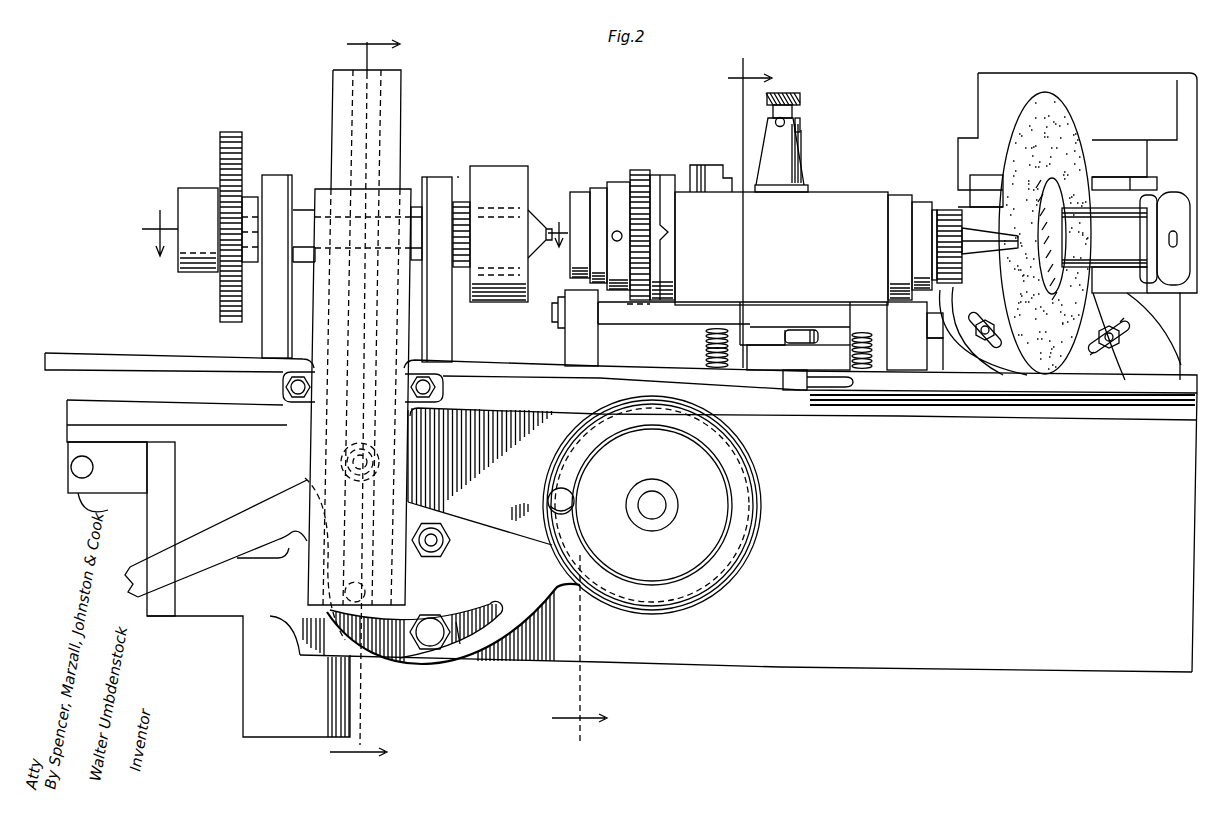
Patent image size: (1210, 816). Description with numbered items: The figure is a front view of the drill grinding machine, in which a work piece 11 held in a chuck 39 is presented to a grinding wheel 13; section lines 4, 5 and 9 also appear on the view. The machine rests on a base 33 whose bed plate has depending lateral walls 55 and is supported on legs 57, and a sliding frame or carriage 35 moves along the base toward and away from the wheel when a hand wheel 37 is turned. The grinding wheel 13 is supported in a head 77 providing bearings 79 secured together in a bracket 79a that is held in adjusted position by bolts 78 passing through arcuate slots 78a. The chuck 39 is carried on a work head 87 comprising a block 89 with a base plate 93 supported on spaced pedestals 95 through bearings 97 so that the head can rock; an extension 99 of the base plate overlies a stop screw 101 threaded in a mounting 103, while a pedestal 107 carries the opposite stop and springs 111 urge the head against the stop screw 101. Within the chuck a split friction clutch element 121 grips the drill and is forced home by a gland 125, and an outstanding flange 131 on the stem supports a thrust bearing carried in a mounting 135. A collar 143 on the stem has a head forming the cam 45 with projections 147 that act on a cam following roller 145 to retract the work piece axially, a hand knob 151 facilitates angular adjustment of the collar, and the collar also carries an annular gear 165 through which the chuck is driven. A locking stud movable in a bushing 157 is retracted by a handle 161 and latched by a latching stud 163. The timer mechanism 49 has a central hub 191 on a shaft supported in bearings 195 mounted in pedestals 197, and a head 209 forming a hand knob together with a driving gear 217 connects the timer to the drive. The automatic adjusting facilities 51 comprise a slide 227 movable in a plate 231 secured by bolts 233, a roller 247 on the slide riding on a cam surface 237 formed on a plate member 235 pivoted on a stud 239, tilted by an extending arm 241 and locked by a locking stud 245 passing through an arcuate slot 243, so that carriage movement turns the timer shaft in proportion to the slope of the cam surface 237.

The section line 4- 4 is at (365, 399).
The section line 5- 5 is at (656, 398).
The section line 9- 9 is at (346, 228).
The work piece 11 is at (978, 255).
The grinding wheel 13 is at (1062, 117).
The base 33 is at (632, 532).
The sliding frame 35 is at (103, 353).
The hand wheel 37 is at (762, 508).
The chuck 39 is at (924, 192).
The cam 45 is at (660, 324).
The timer mechanism 49 is at (463, 168).
The timer adjusting facilities 51 is at (457, 492).
The lateral walls 55 is at (806, 665).
The legs 57 is at (243, 692).
The head 77 is at (1077, 226).
The bolts 78 is at (1120, 342).
The arcuate slots 78a is at (1100, 353).
The bearings 79 is at (1126, 238).
The bracket 79a is at (1126, 322).
The work head 87 is at (517, 167).
The block 89 is at (781, 248).
The base plate 93 is at (614, 325).
The pedestals 95 is at (565, 352).
The bearings 97 is at (552, 314).
The extension 99 is at (843, 303).
The stop screw 101 is at (783, 386).
The mounting 103 is at (798, 357).
The pedestal 107 is at (768, 331).
The springs 111 is at (706, 343).
The split friction clutch element 121 is at (983, 331).
The gland 125 is at (945, 212).
The outstanding flange 131 is at (932, 300).
The mounting 135 is at (898, 205).
The collar 143 is at (617, 182).
The cam following roller 145 is at (693, 186).
The projections 147 is at (664, 258).
The hand knob 151 is at (578, 192).
The bushing 157 is at (806, 168).
The handle 161 is at (797, 97).
The latching stud 163 is at (802, 126).
The annular gear 165 is at (638, 170).
The central hub 191 is at (462, 267).
The bearings 195 is at (426, 200).
The pedestals 197 is at (266, 200).
The head 209 is at (198, 188).
The driving gear 217 is at (232, 132).
The slide 227 is at (338, 108).
The plate 231 is at (325, 189).
The bolts 233 is at (282, 387).
The plate member 235 is at (525, 620).
The cam surface 237 is at (485, 524).
The stud 239 is at (452, 550).
The extending arm 241 is at (246, 517).
The arcuate slot 243 is at (461, 650).
The locking stud 245 is at (426, 646).
The roller 247 is at (352, 462).